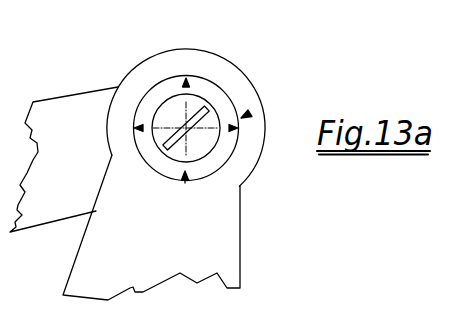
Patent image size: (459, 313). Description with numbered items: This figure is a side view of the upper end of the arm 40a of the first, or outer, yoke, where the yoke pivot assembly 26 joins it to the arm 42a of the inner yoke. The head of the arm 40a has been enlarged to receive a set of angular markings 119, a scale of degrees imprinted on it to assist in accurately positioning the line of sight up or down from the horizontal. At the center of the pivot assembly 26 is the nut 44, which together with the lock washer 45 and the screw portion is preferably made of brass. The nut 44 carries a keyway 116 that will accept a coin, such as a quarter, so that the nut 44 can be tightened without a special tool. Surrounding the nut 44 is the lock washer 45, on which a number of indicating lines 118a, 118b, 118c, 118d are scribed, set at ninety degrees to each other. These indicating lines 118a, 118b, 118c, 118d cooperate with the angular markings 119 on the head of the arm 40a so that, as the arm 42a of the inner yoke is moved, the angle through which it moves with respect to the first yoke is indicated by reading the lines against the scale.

The indicating line 118c is at (137, 122).
The nut 44 is at (170, 108).
The angular markings 119 is at (187, 50).
The indicating line 118d is at (195, 78).
The keyway 116 is at (206, 101).
The yoke pivot assembly 26 is at (250, 113).
The arm of the inner yoke 42a is at (77, 182).
The arm of first yoke 40a is at (167, 257).
The indicating line 118a is at (233, 132).
The lock washer 45 is at (217, 163).
The indicating line 118b is at (185, 183).